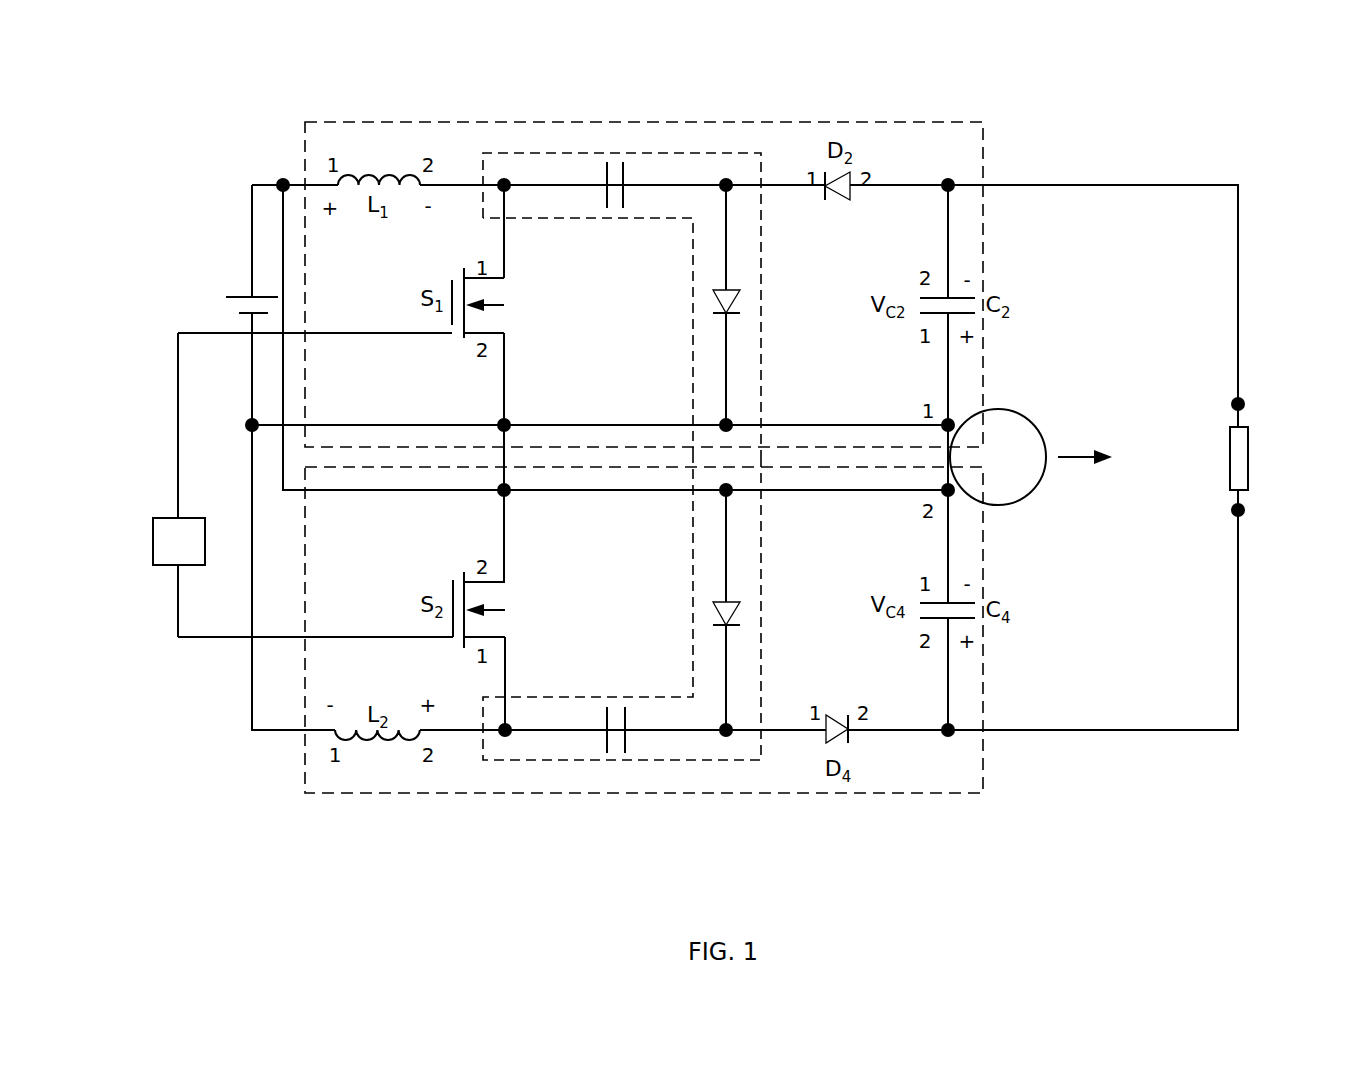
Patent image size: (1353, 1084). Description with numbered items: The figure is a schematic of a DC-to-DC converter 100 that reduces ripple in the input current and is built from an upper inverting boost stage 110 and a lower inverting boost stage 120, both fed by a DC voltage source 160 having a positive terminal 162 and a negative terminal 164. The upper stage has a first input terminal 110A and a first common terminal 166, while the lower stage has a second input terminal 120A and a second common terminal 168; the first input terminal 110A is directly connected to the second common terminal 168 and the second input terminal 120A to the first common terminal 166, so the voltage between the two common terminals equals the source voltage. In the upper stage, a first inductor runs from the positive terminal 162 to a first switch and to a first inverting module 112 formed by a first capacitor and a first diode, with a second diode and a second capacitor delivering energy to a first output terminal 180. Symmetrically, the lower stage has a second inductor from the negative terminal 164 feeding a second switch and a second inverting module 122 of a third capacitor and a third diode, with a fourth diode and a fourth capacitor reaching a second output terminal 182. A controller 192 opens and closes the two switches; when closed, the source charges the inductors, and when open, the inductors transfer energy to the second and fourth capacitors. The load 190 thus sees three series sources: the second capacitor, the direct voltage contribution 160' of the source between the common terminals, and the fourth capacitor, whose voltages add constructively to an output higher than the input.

The DC-to-DC converter 100 is at (1192, 70).
The upper inverting boost stage 110 is at (650, 110).
The first input terminal 110A is at (283, 178).
The first inverting module 112 is at (694, 138).
The lower inverting boost stage 120 is at (420, 802).
The second input terminal 120A is at (246, 425).
The second inverting module 122 is at (708, 772).
The voltage source 160 is at (278, 280).
The direct voltage contribution 160' is at (1031, 421).
The positive terminal 162 is at (274, 296).
The negative terminal 164 is at (248, 318).
The first common terminal 166 is at (614, 420).
The second common terminal 168 is at (614, 495).
The first output terminal 180 is at (948, 178).
The second output terminal 182 is at (950, 740).
The load 190 is at (1250, 430).
The controller 192 is at (152, 545).